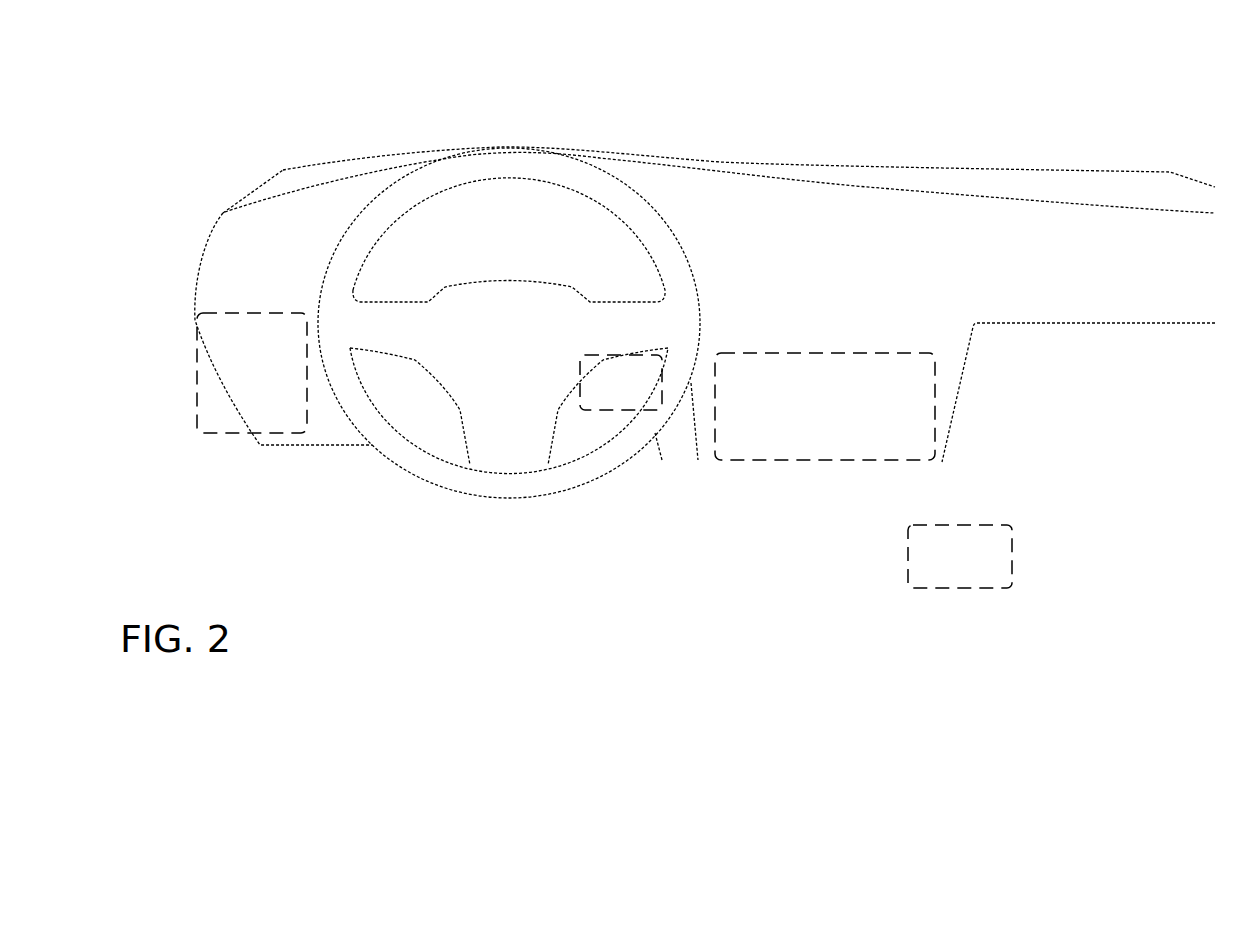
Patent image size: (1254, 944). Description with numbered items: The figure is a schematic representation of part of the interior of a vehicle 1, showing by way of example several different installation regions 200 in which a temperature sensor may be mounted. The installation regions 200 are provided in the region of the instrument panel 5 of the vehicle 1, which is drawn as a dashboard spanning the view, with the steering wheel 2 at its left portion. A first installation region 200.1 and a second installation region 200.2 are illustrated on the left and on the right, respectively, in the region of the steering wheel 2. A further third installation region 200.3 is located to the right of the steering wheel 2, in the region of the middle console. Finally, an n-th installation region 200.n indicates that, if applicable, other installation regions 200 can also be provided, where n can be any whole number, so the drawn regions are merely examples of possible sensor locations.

The vehicle 1 is at (219, 105).
The steering wheel 2 is at (634, 204).
The instrument panel 5 is at (484, 200).
The installation regions 200 is at (624, 450).
The first installation region 200.1 is at (252, 373).
The second installation region 200.2 is at (621, 382).
The third installation region 200.3 is at (825, 406).
The n-th installation region 200.n is at (960, 556).